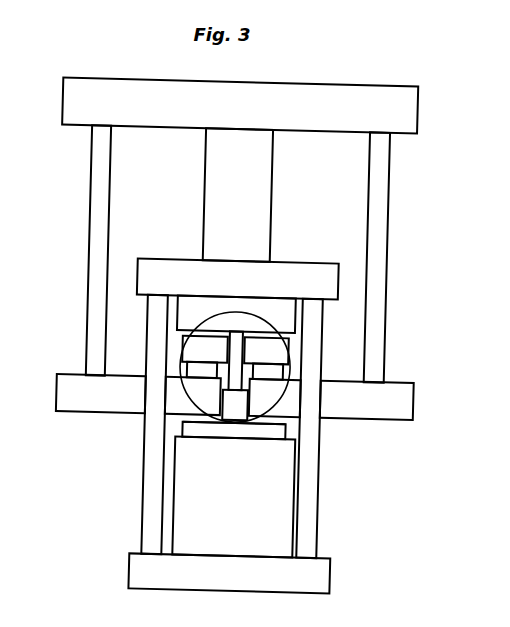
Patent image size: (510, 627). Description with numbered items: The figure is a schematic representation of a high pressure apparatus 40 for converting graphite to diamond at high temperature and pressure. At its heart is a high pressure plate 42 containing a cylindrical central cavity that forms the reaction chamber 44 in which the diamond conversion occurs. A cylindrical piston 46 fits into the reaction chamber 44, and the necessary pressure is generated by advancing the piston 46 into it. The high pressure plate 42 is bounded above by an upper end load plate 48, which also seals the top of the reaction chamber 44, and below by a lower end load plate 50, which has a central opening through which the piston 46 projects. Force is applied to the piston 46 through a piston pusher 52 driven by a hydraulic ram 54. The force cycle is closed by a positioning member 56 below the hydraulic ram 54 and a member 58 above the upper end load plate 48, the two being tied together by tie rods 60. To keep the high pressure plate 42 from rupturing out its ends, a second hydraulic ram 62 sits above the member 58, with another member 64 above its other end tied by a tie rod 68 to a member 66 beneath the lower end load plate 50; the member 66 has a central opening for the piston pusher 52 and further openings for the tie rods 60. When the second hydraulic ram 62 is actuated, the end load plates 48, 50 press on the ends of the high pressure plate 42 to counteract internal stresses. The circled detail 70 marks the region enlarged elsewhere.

The high pressure apparatus 40 is at (440, 312).
The high pressure plate 42 is at (205, 356).
The reaction chamber 44 is at (238, 337).
The piston 46 is at (242, 383).
The upper end load plate 48 is at (236, 314).
The lower end load plate 50 is at (269, 374).
The piston pusher 52 is at (247, 432).
The hydraulic ram 54 is at (233, 497).
The positioning member 56 is at (229, 573).
The member 58 is at (238, 279).
The tie rods 60 is at (148, 501).
The second hydraulic ram 62 is at (238, 195).
The member 64 is at (240, 106).
The member 66 is at (235, 397).
The tie rod 68 is at (97, 200).
The detail 70 is at (188, 424).